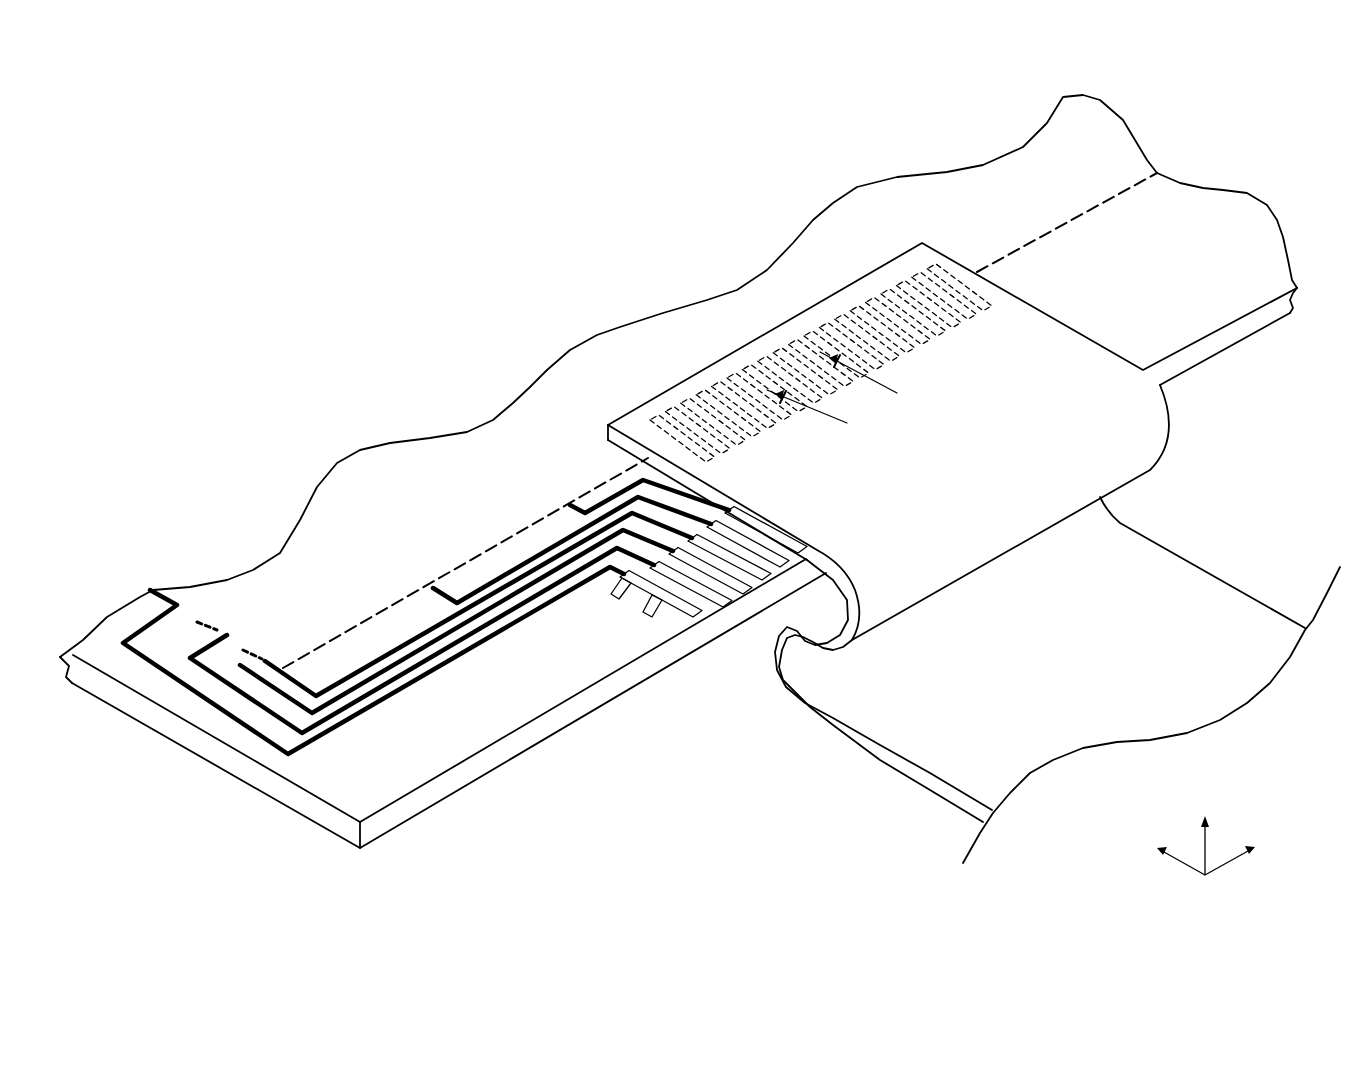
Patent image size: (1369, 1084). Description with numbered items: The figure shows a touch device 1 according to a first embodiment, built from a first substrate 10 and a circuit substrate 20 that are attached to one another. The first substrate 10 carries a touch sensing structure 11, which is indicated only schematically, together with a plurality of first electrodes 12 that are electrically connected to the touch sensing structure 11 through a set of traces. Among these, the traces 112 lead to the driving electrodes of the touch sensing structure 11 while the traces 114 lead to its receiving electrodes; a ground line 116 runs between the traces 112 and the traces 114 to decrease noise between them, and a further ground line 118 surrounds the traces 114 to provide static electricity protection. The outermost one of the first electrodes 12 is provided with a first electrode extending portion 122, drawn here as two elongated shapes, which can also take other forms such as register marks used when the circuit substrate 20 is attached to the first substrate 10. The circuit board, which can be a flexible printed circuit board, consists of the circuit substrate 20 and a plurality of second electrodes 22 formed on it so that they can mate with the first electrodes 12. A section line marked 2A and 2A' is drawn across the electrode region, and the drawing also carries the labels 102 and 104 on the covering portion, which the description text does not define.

The touch device 1 is at (77, 158).
The first substrate 10 is at (308, 805).
The touch sensing structure 11 is at (192, 697).
The first electrodes 12 is at (697, 615).
The circuit substrate 20 is at (1177, 582).
The second electrodes 22 is at (920, 263).
The cover plate 102 is at (1218, 228).
The cover plate bottom layer 104 is at (1223, 352).
The traces 112 is at (327, 725).
The traces 114 is at (503, 573).
The ground line 116 is at (272, 662).
The ground line 118 is at (247, 737).
The first electrode extending portion 122 is at (655, 615).
The section line 2A is at (827, 417).
The section line 2A' is at (884, 383).